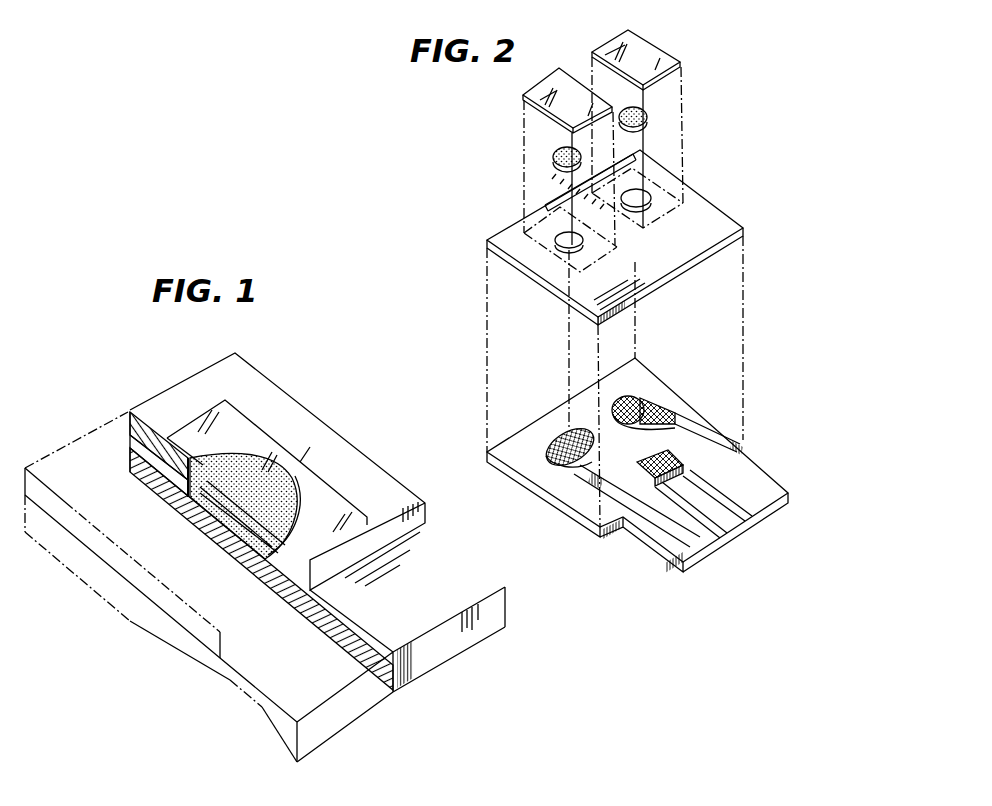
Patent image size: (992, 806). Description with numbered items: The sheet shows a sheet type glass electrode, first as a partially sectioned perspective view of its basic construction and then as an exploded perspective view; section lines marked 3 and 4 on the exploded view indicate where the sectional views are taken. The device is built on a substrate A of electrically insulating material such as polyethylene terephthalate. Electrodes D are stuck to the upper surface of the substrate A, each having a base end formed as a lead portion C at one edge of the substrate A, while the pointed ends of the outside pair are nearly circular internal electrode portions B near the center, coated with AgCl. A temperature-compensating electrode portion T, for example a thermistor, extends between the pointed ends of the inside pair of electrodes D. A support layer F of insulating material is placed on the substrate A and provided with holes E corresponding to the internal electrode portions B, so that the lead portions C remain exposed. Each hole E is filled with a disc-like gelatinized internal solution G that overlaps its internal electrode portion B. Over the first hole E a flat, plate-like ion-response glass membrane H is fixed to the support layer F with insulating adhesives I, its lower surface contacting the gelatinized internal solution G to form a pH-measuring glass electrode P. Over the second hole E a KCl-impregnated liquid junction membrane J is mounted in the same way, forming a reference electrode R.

In FIG. 1, the substrate A is at (325, 644).
In FIG. 2, the substrate A is at (580, 523).
In FIG. 1, the internal electrode portion B is at (207, 518).
In FIG. 2, the internal electrode portion B is at (587, 448).
In FIG. 1, the lead portion C is at (373, 623).
In FIG. 2, the lead portion C is at (740, 507).
In FIG. 1, the electrode D is at (268, 589).
In FIG. 2, the electrode D is at (700, 490).
In FIG. 1, the hole E is at (293, 483).
In FIG. 2, the hole E is at (650, 196).
In FIG. 1, the support layer F is at (147, 468).
In FIG. 2, the support layer F is at (707, 228).
In FIG. 1, the gelatinized internal solution G is at (208, 504).
In FIG. 2, the gelatinized internal solution G is at (553, 157).
In FIG. 1, the ion-response glass membrane H is at (258, 440).
In FIG. 2, the ion-response glass membrane H is at (550, 88).
In FIG. 1, the adhesives I is at (268, 566).
In FIG. 2, the liquid junction membrane J is at (613, 48).
In FIG. 2, the pH-measuring glass electrode P is at (512, 126).
In FIG. 2, the reference electrode R is at (700, 73).
In FIG. 2, the temperature-compensating electrode portion T is at (665, 460).
In FIG. 2, the section line 3- 3 is at (496, 496).
In FIG. 2, the section line 4- 4 is at (500, 400).